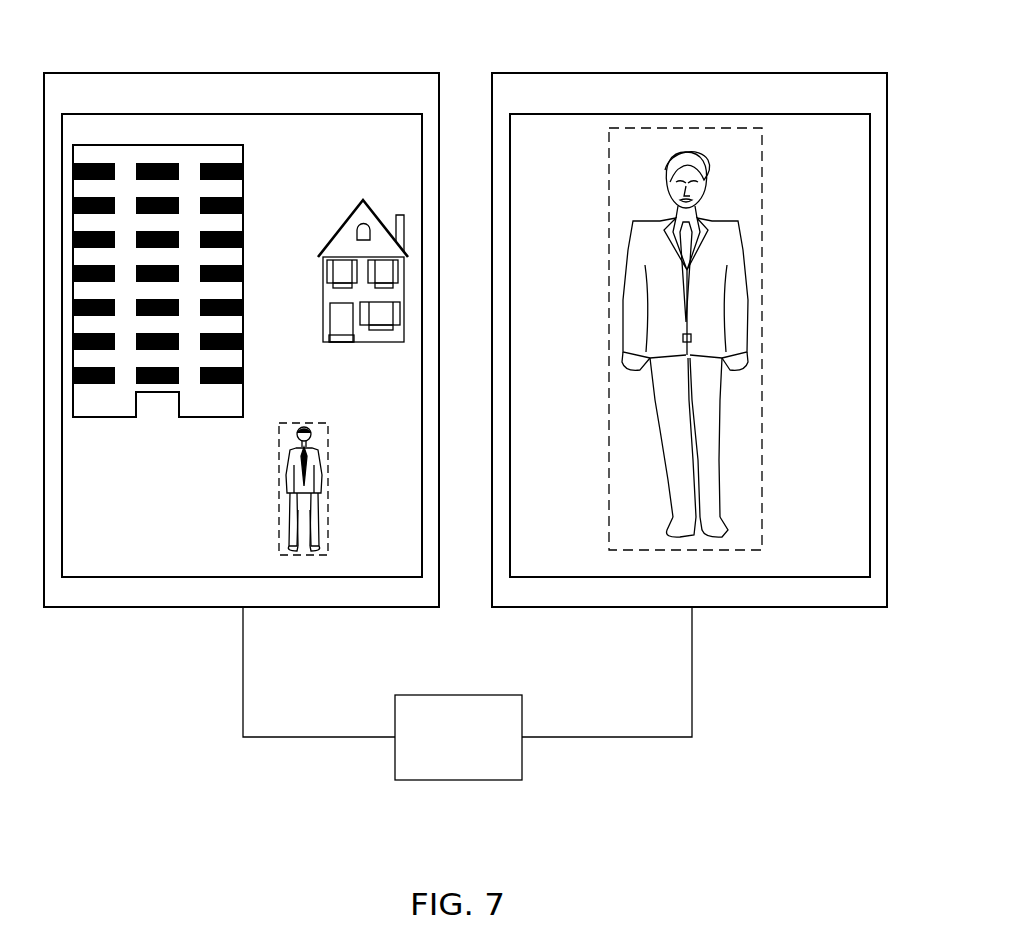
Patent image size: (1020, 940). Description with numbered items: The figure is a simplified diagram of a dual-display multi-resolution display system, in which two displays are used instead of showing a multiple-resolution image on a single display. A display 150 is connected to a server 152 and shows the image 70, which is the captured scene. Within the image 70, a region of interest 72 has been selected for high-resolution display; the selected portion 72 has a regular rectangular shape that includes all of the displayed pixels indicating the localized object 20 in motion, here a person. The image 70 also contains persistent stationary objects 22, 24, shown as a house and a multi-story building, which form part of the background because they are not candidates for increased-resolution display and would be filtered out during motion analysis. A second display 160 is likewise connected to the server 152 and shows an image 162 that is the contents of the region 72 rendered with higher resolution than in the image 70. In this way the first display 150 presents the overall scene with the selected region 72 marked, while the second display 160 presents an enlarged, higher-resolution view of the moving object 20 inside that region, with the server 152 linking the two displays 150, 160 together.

The display 150 is at (170, 73).
The image 70 is at (348, 113).
The persistent stationary object 22 is at (350, 213).
The persistent stationary object 24 is at (98, 417).
The region of interest 72 is at (310, 423).
The object in motion 20 is at (298, 527).
The display 160 is at (582, 73).
The image 162 is at (727, 114).
The server 152 is at (458, 695).